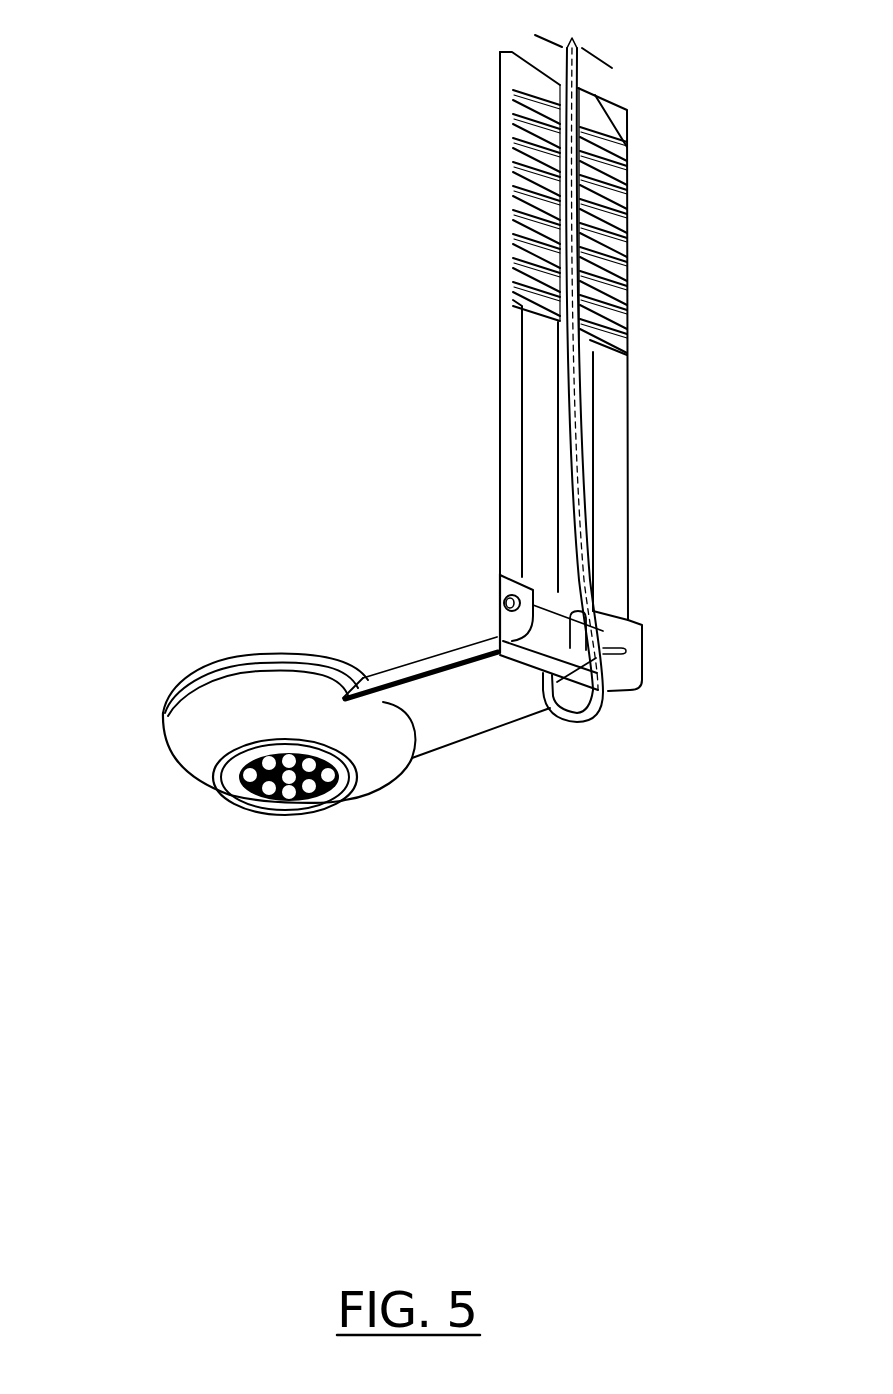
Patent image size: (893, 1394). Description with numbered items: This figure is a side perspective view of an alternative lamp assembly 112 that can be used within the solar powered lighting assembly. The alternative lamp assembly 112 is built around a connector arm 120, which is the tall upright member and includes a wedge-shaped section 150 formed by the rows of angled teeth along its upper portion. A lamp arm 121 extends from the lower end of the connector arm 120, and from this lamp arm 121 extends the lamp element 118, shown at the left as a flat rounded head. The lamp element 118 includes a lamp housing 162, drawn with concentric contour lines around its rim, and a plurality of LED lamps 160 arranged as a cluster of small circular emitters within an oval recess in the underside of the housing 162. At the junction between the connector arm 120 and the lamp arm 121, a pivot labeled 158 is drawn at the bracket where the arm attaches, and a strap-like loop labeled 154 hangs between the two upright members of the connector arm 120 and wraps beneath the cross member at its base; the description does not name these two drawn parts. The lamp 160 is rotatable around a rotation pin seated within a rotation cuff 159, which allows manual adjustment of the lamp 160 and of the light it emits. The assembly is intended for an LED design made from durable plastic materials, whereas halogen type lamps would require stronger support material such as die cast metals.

The alternative lamp assembly 112 is at (258, 359).
The lamp element 118 is at (256, 637).
The connector arm 120 is at (610, 464).
The lamp arm 121 is at (465, 716).
The wedge-shaped section 150 is at (631, 224).
The strap 154 is at (600, 712).
The pivot pin 158 is at (508, 597).
The rotation cuff 159 is at (628, 643).
The LED lamps 160 is at (284, 792).
The lamp housing 162 is at (188, 735).